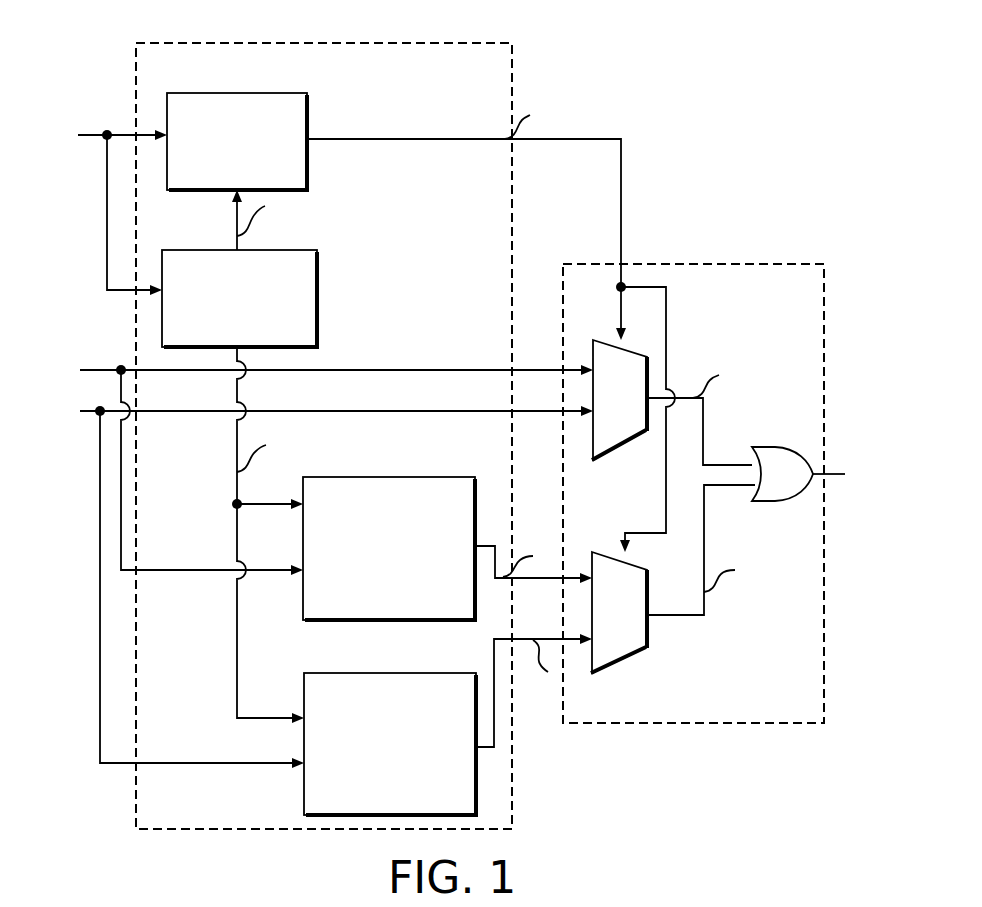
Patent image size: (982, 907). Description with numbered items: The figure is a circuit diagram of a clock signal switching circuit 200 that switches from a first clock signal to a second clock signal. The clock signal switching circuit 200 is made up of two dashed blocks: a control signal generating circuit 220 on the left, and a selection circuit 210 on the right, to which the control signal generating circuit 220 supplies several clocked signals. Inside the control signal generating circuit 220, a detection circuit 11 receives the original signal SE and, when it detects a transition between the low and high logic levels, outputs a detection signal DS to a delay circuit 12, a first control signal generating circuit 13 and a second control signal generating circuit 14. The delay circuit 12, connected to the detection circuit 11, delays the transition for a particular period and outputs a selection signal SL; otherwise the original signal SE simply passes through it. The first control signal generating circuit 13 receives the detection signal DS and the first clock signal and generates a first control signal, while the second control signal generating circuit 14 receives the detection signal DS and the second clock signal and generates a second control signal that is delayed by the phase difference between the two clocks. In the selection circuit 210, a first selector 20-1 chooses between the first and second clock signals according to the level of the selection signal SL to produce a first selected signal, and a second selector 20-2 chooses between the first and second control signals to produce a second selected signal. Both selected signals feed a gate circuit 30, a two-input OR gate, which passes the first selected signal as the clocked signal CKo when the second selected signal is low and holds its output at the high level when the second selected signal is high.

The clock signal switching circuit 200 is at (696, 113).
The control signal generating circuit 220 is at (410, 43).
The selection circuit 210 is at (732, 264).
The delay circuit 12 is at (283, 93).
The detection circuit 11 is at (296, 250).
The first control signal generating circuit 13 is at (450, 477).
The second control signal generating circuit 14 is at (430, 673).
The first selector 20-1 is at (610, 338).
The second selector 20-2 is at (609, 553).
The gate circuit 30 is at (780, 447).